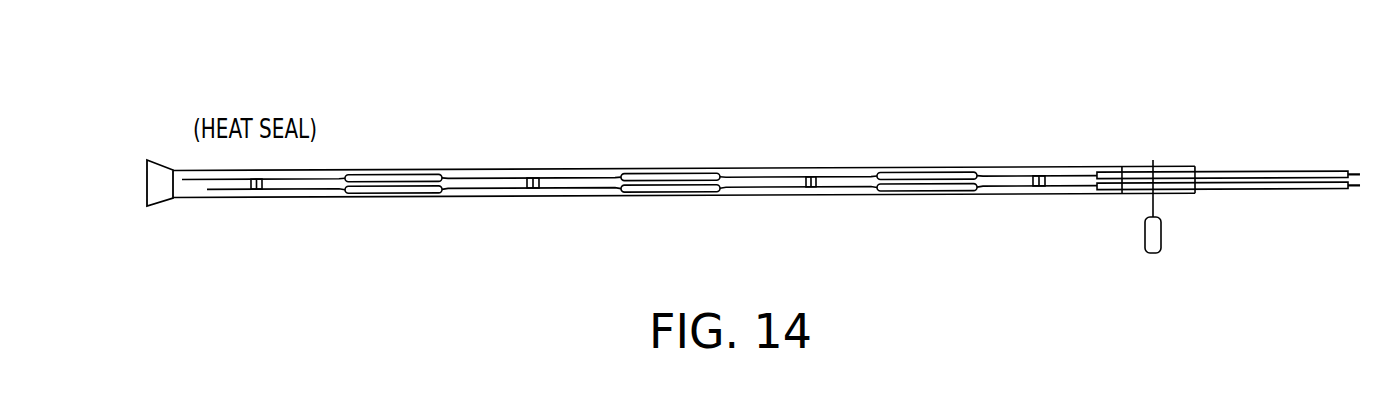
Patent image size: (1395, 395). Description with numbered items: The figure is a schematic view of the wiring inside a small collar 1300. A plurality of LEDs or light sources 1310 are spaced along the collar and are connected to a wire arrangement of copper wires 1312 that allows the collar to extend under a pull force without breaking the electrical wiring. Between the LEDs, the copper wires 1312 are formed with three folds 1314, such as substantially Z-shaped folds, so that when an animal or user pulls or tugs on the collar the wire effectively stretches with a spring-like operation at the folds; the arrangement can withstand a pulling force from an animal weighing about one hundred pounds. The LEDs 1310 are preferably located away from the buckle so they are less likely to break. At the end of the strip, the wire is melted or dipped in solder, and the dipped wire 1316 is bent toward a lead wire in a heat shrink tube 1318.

The small collar 1300 is at (757, 108).
The LEDs or light sources 1310 is at (257, 190).
The copper wires 1312 is at (1323, 156).
The folds 1314 is at (397, 176).
The dipped wire 1316 is at (1173, 167).
The heat shrink tube 1318 is at (1194, 165).